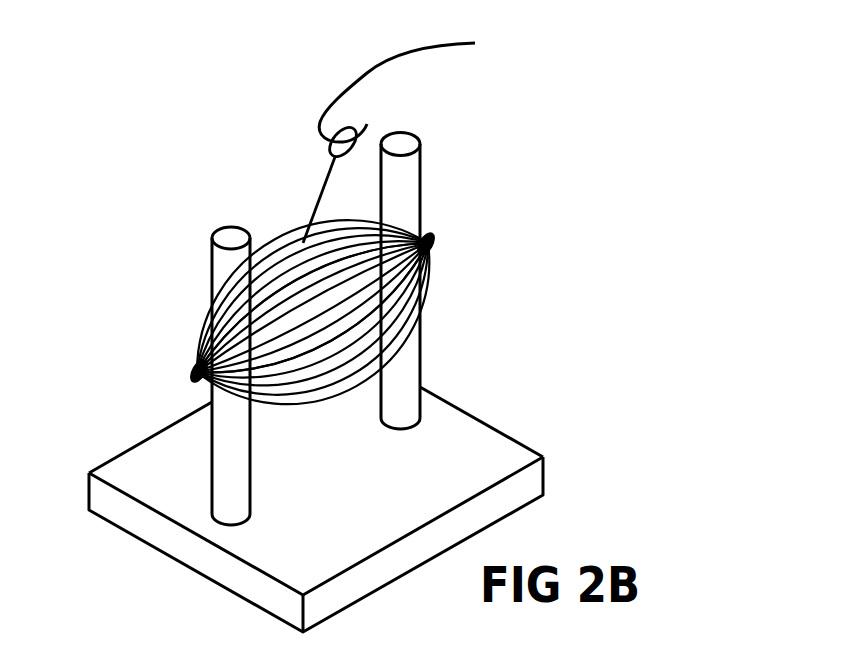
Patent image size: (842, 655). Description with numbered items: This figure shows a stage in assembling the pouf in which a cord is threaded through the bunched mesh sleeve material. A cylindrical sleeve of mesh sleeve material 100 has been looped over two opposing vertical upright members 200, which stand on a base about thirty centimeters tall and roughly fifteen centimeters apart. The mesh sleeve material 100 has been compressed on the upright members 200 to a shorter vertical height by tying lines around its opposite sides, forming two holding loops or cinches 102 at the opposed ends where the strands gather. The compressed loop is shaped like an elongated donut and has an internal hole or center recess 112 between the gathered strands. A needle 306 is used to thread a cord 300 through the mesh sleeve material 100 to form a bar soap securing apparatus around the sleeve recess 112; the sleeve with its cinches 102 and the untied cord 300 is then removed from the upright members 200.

The mesh sleeve material 100 is at (332, 380).
The holding loops or cinches 102 is at (195, 369).
The center recess 112 is at (310, 263).
The vertical upright members 200 is at (225, 228).
The cord 300 is at (357, 68).
The needle 306 is at (317, 198).